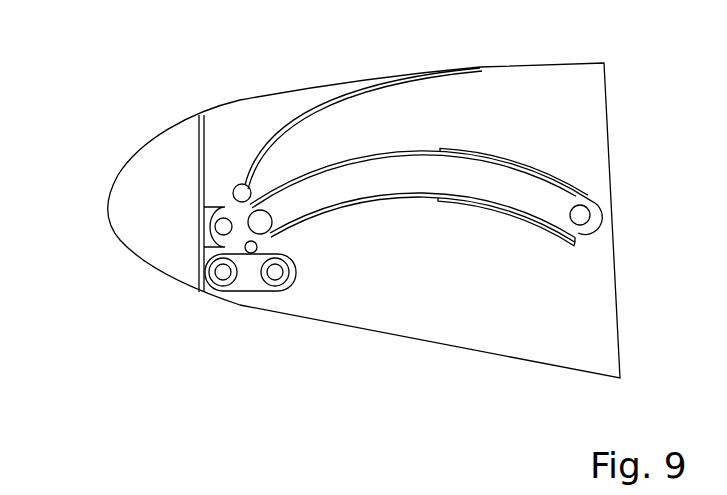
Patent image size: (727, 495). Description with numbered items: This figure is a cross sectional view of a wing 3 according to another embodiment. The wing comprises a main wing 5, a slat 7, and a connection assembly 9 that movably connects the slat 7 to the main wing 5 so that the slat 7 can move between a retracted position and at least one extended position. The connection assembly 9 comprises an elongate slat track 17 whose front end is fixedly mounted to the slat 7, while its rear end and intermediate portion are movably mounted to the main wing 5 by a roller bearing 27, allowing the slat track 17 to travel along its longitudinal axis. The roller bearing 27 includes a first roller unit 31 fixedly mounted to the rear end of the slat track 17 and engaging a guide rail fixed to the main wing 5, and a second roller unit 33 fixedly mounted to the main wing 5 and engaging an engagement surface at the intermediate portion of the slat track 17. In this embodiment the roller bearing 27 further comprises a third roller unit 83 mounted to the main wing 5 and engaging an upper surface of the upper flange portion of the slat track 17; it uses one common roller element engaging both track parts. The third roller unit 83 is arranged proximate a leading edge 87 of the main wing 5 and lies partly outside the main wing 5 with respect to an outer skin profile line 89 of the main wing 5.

The wing 3 is at (100, 125).
The main wing 5 is at (496, 299).
The slat 7 is at (146, 229).
The connection assembly 9 is at (321, 191).
The slat track 17 is at (345, 183).
The roller bearing 27 is at (431, 183).
The first roller unit 31 is at (432, 183).
The second roller unit 33 is at (292, 224).
The third roller unit 83 is at (235, 186).
The leading edge 87 is at (250, 252).
The outer skin profile line 89 is at (250, 183).